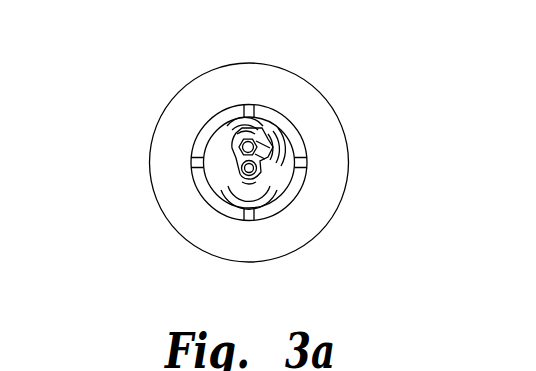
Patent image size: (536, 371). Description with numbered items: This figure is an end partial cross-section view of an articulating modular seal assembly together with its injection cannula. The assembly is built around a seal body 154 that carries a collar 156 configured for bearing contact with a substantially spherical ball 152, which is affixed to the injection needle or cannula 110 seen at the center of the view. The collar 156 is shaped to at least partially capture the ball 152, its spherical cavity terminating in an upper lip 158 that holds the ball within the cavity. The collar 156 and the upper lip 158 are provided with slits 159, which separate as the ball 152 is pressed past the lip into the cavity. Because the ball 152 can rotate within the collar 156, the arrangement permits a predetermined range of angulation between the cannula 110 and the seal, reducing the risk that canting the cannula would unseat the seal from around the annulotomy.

The injection needle or cannula 110 is at (228, 143).
The ball 152 is at (219, 176).
The seal body 154 is at (200, 76).
The collar 156 is at (294, 120).
The upper lip 158 is at (297, 198).
The slits 159 is at (251, 104).